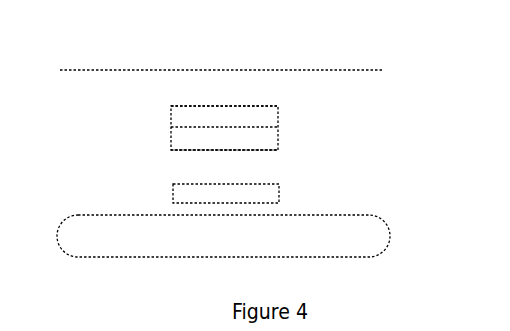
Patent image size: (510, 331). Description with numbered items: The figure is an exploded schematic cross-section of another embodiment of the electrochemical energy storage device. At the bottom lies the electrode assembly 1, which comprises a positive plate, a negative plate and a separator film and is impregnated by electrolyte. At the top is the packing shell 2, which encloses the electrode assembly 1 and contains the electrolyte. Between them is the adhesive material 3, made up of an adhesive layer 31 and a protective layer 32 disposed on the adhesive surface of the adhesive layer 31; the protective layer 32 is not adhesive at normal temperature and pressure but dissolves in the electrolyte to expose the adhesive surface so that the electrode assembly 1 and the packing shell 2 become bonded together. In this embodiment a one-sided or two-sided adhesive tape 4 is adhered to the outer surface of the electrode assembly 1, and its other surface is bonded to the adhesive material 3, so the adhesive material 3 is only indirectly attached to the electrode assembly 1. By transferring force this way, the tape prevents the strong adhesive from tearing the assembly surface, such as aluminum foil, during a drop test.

The electrode assembly 1 is at (348, 235).
The packing shell 2 is at (328, 70).
The adhesive material 3 is at (160, 128).
The adhesive layer 31 is at (278, 134).
The protective layer 32 is at (278, 120).
The adhesive tape 4 is at (164, 192).